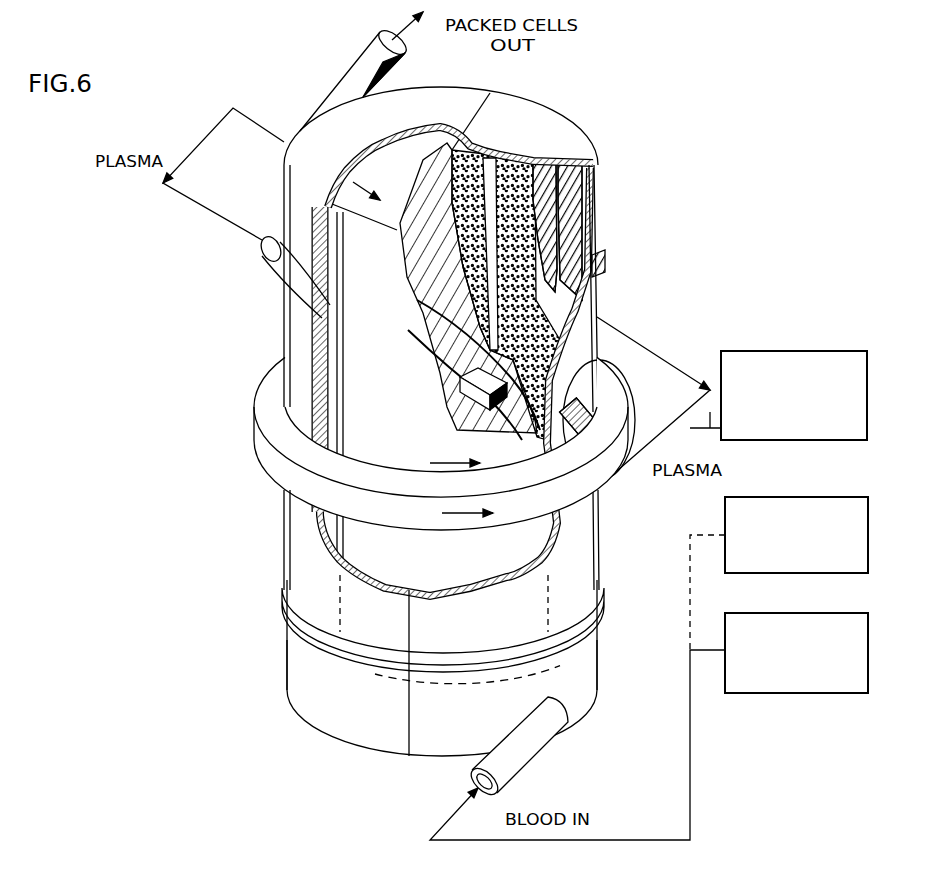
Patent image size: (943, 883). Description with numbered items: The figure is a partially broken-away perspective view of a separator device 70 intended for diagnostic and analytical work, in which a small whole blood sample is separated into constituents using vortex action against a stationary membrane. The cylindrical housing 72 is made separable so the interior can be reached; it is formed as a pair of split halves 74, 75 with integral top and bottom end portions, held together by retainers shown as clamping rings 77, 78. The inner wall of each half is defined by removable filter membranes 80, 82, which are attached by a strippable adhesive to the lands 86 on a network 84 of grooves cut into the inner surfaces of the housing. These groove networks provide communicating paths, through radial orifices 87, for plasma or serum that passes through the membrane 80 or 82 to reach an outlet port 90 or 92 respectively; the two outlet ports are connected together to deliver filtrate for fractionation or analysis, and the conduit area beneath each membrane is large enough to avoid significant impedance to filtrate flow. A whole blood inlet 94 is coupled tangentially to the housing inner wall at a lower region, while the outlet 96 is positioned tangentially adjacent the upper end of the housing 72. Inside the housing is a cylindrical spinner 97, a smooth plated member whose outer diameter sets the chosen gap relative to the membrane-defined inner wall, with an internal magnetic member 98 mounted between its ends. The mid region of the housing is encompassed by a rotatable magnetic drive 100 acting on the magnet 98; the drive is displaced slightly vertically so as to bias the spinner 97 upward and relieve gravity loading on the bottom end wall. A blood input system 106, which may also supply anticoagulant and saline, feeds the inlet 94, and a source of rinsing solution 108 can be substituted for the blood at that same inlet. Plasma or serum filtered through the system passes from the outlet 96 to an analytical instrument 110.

The separator device 70 is at (630, 167).
The cylindrical housing 72 is at (380, 728).
The split half 74 is at (323, 732).
The split half 75 is at (590, 711).
The clamping ring 77 is at (601, 258).
The clamping ring 78 is at (597, 607).
The filter membrane 80 is at (330, 353).
The filter membrane 82 is at (510, 177).
The network of grooves 84 is at (570, 170).
The lands 86 is at (597, 283).
The radial orifices 87 is at (575, 415).
The outlet port 90 is at (268, 262).
The outlet port 92 is at (613, 483).
The whole blood inlet 94 is at (533, 733).
The outlet 96 is at (357, 64).
The cylindrical spinner 97 is at (408, 160).
The internal magnetic member 98 is at (590, 512).
The rotatable magnetic drive 100 is at (268, 453).
The blood input system 106 is at (815, 613).
The source of rinsing solution 108 is at (815, 497).
The analytical instrument 110 is at (815, 350).